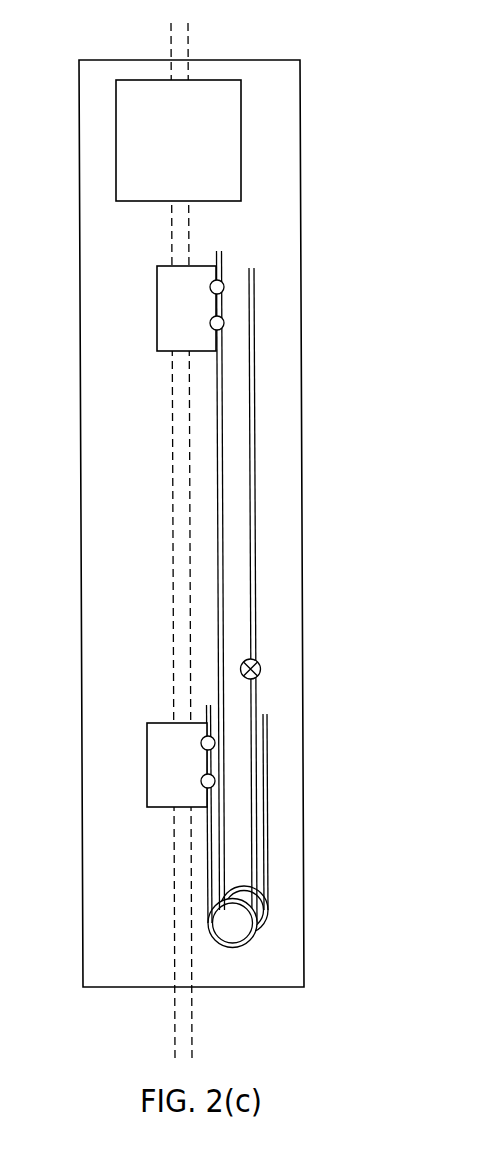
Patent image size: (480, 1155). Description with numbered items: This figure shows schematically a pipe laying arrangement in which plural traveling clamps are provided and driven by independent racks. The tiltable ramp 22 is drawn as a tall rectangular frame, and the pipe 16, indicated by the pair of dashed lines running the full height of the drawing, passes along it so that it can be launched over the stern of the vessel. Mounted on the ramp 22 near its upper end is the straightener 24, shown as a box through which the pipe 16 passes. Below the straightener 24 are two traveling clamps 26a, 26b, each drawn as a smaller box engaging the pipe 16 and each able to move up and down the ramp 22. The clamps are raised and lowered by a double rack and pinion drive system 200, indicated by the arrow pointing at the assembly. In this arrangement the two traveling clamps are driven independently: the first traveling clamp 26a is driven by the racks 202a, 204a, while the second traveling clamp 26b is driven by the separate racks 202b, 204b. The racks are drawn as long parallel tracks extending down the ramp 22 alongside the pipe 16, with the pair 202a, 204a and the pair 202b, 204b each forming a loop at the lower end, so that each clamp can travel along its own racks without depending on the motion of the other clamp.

The tiltable ramp 22 is at (80, 410).
The straightener 24 is at (116, 113).
The traveling clamp 26a is at (157, 312).
The traveling clamp 26b is at (147, 737).
The rack 202a is at (217, 371).
The rack 202b is at (207, 827).
The rack 204a is at (270, 773).
The rack 204b is at (255, 558).
The double rack and pinion drive system 200 is at (388, 846).
The pipe 16 is at (174, 1020).